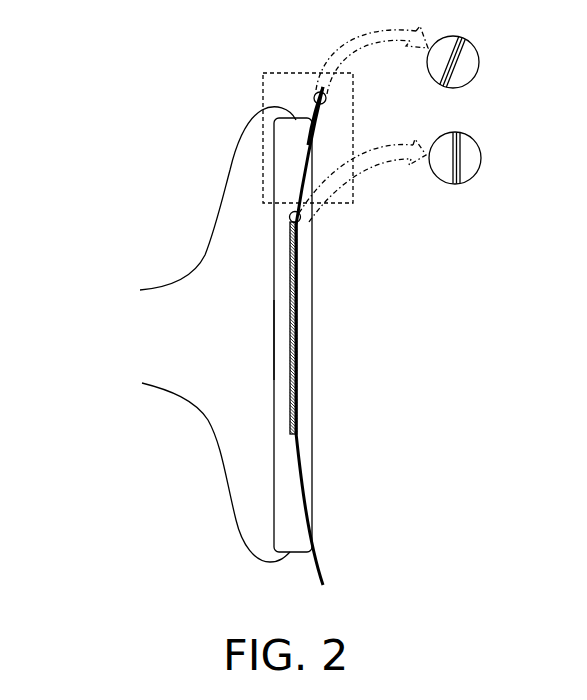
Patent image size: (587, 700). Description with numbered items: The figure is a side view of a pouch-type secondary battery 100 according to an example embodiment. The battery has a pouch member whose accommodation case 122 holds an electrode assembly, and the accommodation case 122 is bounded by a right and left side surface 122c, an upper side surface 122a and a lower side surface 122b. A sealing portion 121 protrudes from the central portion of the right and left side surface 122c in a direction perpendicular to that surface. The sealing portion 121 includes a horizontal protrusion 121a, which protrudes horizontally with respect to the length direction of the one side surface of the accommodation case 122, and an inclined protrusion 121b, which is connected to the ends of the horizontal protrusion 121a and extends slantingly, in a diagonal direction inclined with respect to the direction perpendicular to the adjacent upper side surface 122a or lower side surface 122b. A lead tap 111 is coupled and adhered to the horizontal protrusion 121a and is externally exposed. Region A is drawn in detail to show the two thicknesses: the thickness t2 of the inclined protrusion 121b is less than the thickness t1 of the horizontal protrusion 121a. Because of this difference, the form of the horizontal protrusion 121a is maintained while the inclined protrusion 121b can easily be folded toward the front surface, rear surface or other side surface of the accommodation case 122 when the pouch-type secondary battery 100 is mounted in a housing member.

The pouch-type secondary battery 100 is at (183, 172).
The lead tap 111 is at (312, 404).
The sealing portion 121 is at (436, 205).
The horizontal protrusion 121a is at (297, 262).
The inclined protrusion 121b is at (325, 87).
The accommodation case 122 is at (78, 275).
The upper side surface 122a is at (188, 204).
The lower side surface 122b is at (185, 466).
The right and left side surface 122c is at (283, 337).
The enlarged region A is at (263, 93).
The thickness of the horizontal protrusion t1 is at (434, 157).
The thickness of the inclined protrusion t2 is at (433, 63).